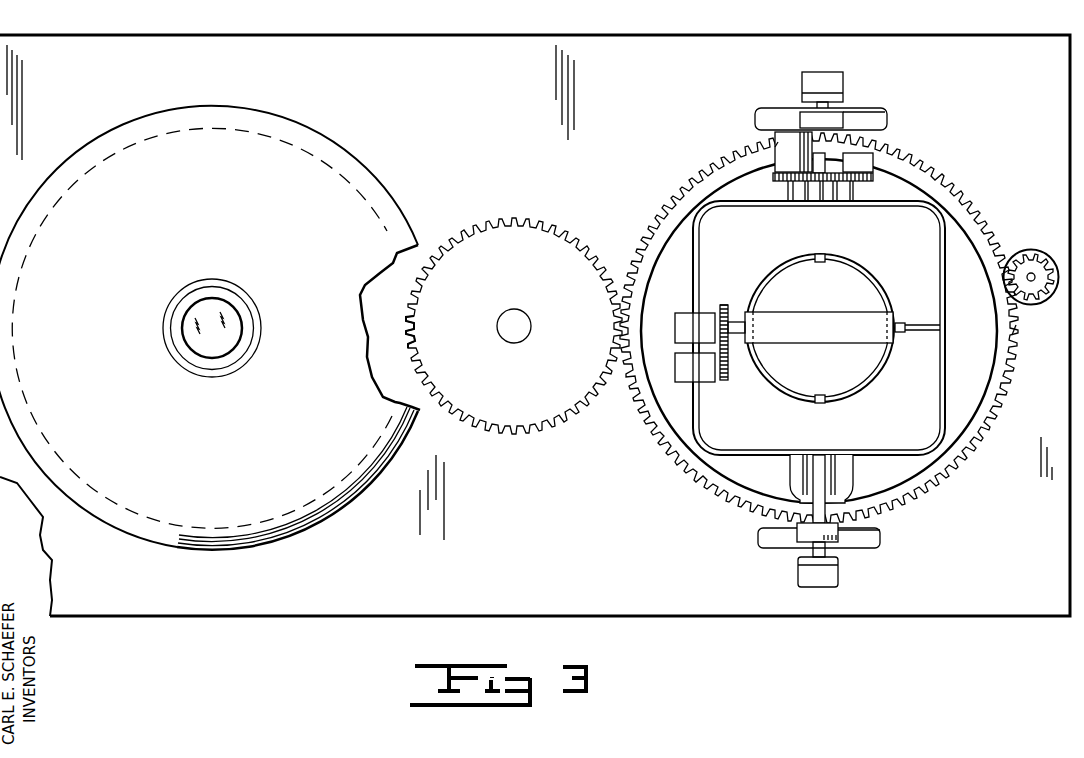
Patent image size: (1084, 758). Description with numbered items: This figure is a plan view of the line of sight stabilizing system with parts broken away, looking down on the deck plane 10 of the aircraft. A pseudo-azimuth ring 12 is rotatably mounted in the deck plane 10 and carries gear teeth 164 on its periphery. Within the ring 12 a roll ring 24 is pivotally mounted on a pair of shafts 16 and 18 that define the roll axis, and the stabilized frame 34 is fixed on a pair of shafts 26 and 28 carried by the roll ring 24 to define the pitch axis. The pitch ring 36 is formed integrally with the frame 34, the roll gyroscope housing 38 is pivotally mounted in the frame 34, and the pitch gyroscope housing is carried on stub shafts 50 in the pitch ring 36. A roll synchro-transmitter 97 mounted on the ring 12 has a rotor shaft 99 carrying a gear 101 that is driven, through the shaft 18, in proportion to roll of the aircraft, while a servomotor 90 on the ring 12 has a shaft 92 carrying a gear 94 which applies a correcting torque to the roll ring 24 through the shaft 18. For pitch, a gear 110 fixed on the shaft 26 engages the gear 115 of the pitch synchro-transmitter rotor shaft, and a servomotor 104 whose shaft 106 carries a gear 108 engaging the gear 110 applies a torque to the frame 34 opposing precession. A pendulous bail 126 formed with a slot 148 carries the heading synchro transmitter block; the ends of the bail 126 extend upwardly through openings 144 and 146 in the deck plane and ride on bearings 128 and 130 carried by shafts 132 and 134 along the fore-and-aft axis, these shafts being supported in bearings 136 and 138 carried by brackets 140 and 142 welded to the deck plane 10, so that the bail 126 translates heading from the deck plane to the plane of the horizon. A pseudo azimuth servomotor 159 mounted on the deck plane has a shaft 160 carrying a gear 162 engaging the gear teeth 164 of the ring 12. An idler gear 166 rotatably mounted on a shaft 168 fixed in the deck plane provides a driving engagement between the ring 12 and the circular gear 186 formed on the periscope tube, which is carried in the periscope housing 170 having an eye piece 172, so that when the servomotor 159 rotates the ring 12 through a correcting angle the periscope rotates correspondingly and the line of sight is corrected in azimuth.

The deck plane 10 is at (1013, 45).
The ring 12 is at (985, 437).
The shaft 16 is at (847, 477).
The shaft 18 is at (820, 198).
The roll ring 24 is at (890, 205).
The shaft 26 is at (747, 313).
The shaft 28 is at (922, 332).
The stabilized frame 34 is at (848, 335).
The pitch ring 36 is at (770, 275).
The roll gyroscope housing 38 is at (863, 300).
The stub shafts 50 is at (826, 257).
The servomotor 90 is at (877, 162).
The shaft 92 is at (850, 168).
The gear 94 is at (860, 181).
The roll synchro-transmitter 97 is at (775, 147).
The roll synchro-transmitter rotor shaft 99 is at (792, 172).
The gear 101 is at (783, 181).
The servomotor 104 is at (680, 383).
The shaft 106 is at (710, 368).
The gear 108 is at (728, 380).
The gear 110 is at (757, 345).
The gear 115 is at (743, 333).
The bail 126 is at (840, 463).
The bearing 128 is at (880, 525).
The bearing 130 is at (803, 120).
The shaft 132 is at (837, 552).
The shaft 134 is at (832, 112).
The bearing 136 is at (798, 560).
The bearing 138 is at (800, 97).
The bracket 140 is at (797, 573).
The bracket 142 is at (841, 84).
The opening 144 is at (758, 537).
The opening 146 is at (757, 112).
The slot 148 is at (808, 468).
The pseudo azimuth servomotor 159 is at (1015, 252).
The shaft 160 is at (1028, 293).
The gear 162 is at (1060, 240).
The gear teeth 164 is at (1018, 342).
The idler gear 166 is at (542, 410).
The shaft 168 is at (517, 337).
The periscope housing 170 is at (272, 532).
The eye piece 172 is at (204, 382).
The circular gear 186 is at (410, 395).